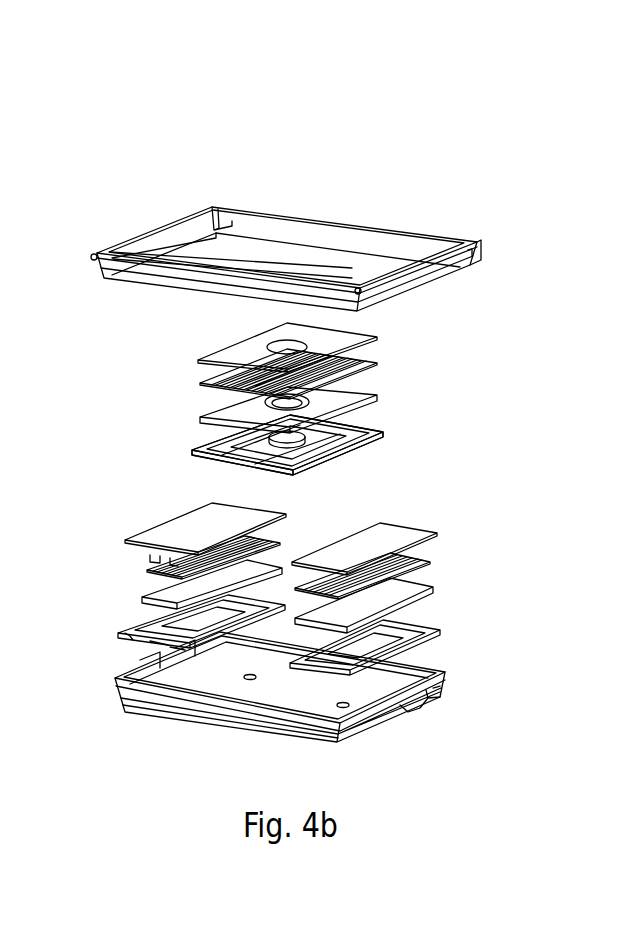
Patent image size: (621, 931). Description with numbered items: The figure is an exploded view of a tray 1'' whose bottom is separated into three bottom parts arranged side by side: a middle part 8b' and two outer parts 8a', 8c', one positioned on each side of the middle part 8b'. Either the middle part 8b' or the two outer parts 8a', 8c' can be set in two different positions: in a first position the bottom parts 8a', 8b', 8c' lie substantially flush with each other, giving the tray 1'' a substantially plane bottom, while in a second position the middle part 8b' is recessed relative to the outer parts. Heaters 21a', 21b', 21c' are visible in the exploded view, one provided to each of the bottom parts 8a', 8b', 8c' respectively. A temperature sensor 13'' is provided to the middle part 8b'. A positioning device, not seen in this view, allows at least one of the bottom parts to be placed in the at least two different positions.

The tray 1'' is at (286, 400).
The outer part 8a' is at (144, 576).
The middle part 8b' is at (352, 399).
The outer part 8c' is at (440, 599).
The heater 21a' is at (342, 518).
The heater 21b' is at (230, 368).
The heater 21c' is at (431, 557).
The temperature sensor 13'' is at (233, 445).